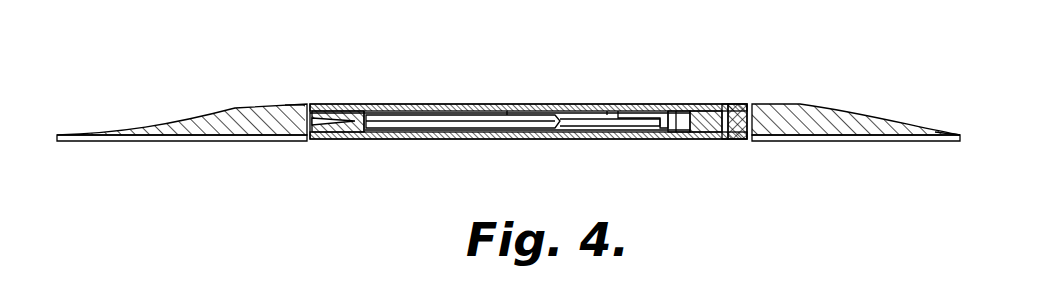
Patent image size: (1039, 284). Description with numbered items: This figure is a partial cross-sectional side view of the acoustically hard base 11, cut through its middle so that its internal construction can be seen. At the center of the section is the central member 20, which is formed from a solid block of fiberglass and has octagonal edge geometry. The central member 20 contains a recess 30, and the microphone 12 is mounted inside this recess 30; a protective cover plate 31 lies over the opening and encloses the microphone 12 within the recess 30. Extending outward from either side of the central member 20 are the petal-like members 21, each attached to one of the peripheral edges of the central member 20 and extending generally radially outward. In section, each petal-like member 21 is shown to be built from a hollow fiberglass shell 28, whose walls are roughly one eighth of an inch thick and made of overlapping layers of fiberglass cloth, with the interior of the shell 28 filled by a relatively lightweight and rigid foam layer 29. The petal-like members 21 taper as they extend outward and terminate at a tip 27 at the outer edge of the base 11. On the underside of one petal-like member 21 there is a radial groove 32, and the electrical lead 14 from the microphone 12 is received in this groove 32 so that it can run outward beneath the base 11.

The acoustically hard base 11 is at (380, 85).
The microphone 12 is at (630, 112).
The electrical lead 14 is at (245, 142).
The central member 20 is at (707, 140).
The petal-like member 21 is at (285, 107).
The tip 27 is at (965, 135).
The hollow fiberglass shell 28 is at (780, 108).
The foam layer 29 is at (815, 142).
The recess 30 is at (700, 109).
The protective cover plate 31 is at (505, 110).
The radial groove 32 is at (245, 110).